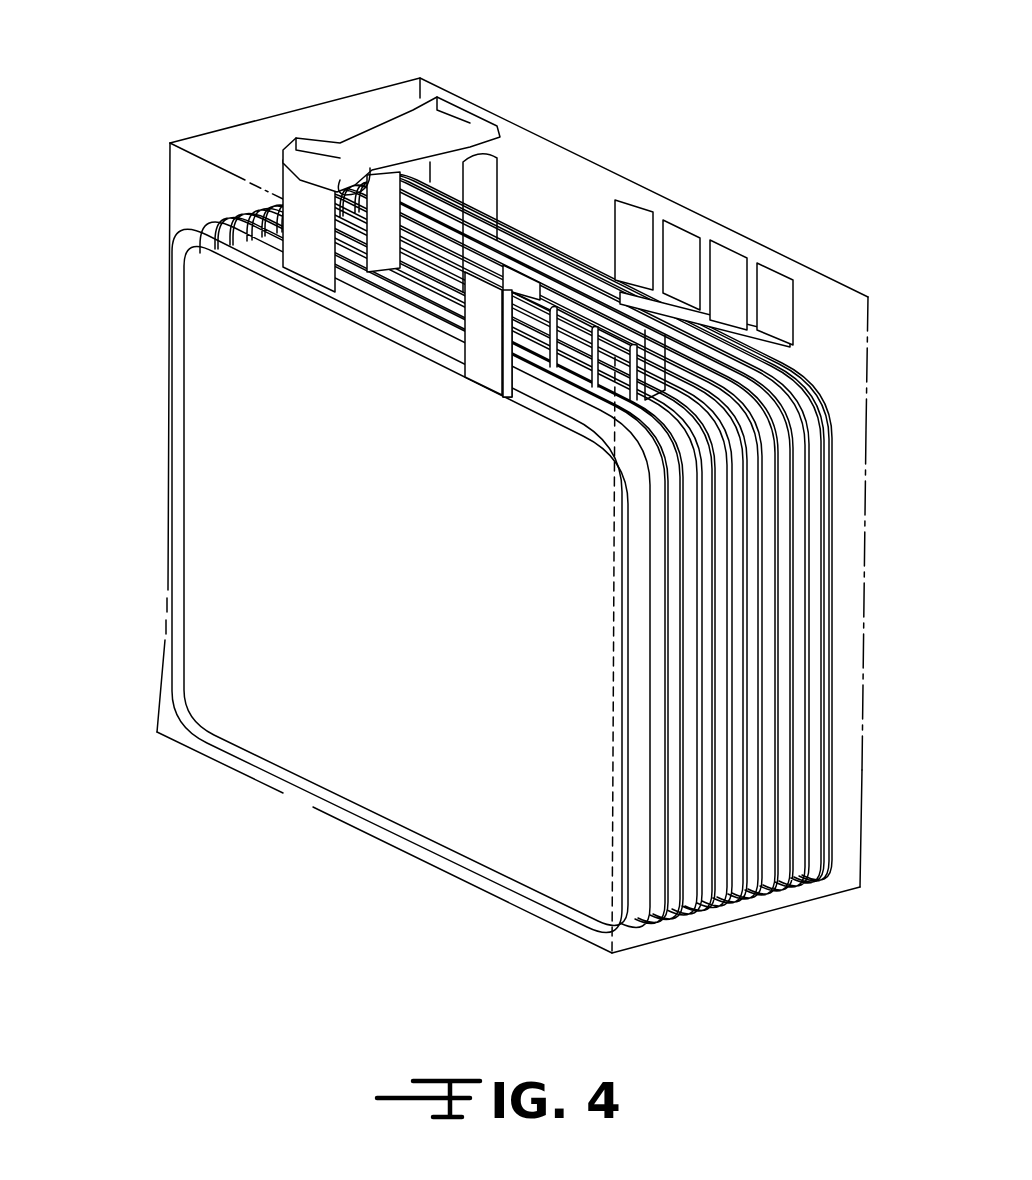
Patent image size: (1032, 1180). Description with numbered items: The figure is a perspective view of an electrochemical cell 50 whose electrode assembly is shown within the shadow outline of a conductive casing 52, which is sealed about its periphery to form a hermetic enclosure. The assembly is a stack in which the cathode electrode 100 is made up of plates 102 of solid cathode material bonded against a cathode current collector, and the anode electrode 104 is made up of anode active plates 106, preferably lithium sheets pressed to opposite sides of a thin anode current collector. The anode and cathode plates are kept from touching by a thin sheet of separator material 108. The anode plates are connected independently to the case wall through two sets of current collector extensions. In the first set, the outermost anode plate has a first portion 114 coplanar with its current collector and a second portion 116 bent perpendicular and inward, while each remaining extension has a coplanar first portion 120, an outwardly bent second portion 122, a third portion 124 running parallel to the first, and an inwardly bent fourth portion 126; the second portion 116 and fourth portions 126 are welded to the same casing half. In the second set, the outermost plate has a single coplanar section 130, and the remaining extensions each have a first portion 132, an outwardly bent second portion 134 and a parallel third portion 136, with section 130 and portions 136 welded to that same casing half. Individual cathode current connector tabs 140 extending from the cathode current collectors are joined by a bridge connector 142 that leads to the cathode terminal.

The electrochemical cell 50 is at (203, 224).
The casing 52 is at (572, 148).
The cathode electrode 100 is at (655, 925).
The plates 102 is at (662, 920).
The anode electrode 104 is at (232, 501).
The anode active plates 106 is at (195, 652).
The separator material 108 is at (688, 922).
The first portion 114 is at (484, 355).
The second portion 116 is at (500, 277).
The first portion 120 is at (650, 393).
The second portion 122 is at (608, 380).
The third portion 124 is at (570, 363).
The fourth portion 126 is at (550, 340).
The single section 130 is at (632, 222).
The first portion 132 is at (660, 285).
The second portion 134 is at (775, 333).
The third portion 136 is at (770, 292).
The cathode current connector tabs 140 is at (300, 232).
The bridge connector 142 is at (392, 148).